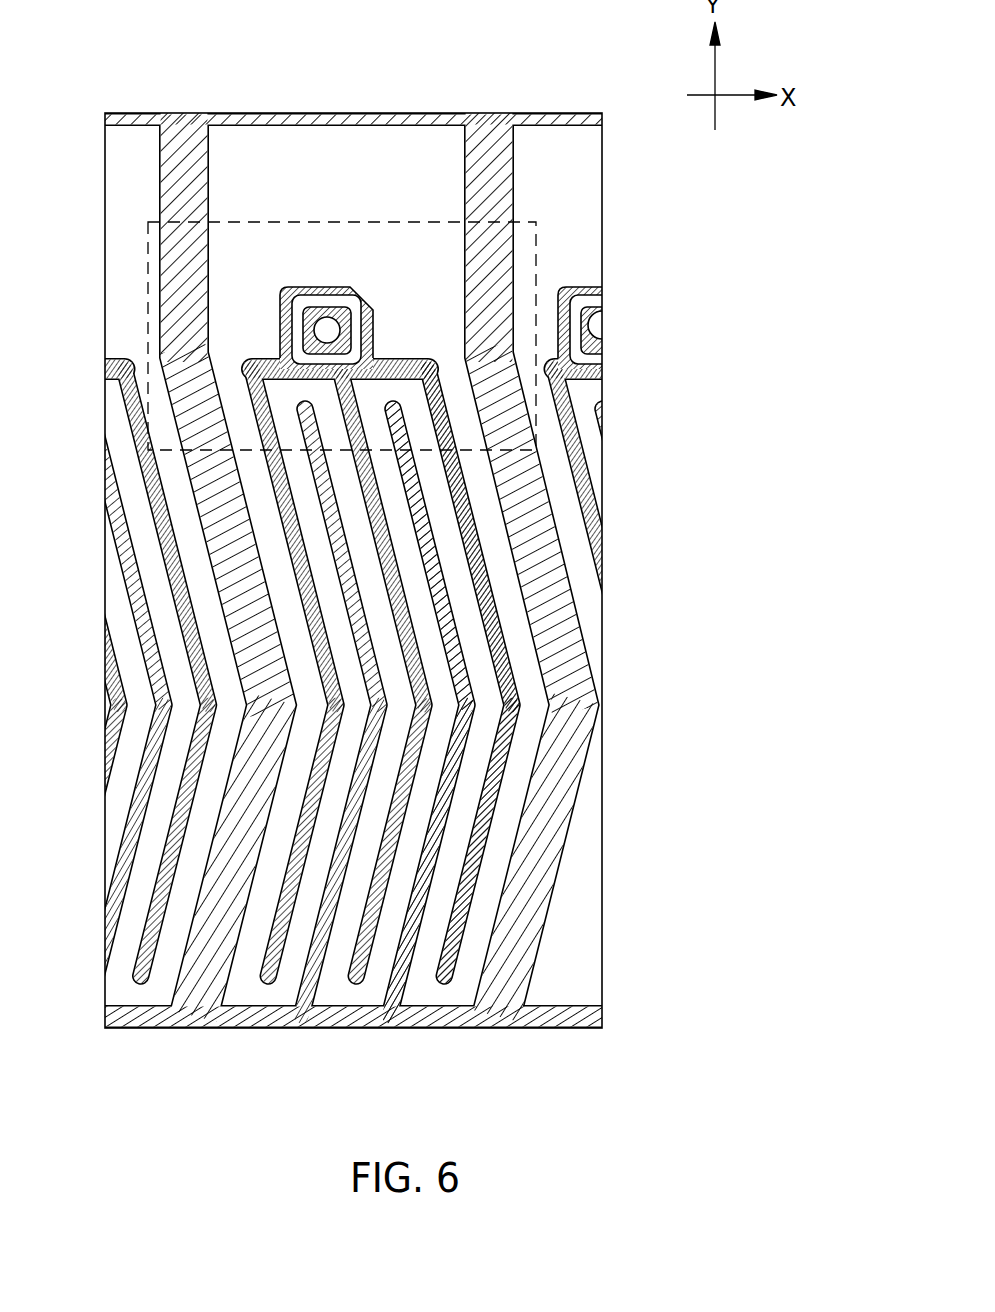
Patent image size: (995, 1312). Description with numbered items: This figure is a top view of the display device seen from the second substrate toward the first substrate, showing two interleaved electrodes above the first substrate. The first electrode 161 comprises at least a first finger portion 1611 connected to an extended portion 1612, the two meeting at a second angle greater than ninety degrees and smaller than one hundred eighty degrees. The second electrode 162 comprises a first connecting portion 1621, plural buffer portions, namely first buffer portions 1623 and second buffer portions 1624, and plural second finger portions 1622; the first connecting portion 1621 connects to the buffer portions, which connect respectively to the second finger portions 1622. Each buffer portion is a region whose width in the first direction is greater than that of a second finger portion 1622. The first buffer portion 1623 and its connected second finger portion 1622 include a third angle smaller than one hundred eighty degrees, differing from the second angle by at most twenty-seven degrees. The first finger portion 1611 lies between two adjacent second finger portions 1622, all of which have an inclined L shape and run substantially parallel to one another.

The first electrode 161 is at (392, 565).
The first finger portion 1611 is at (543, 712).
The extended portion 1612 is at (648, 547).
The second electrode 162 is at (468, 672).
The first connecting portion 1621 is at (266, 372).
The second finger portion 1622 is at (562, 672).
The first buffer portion 1623 is at (603, 360).
The second buffer portion 1624 is at (311, 703).